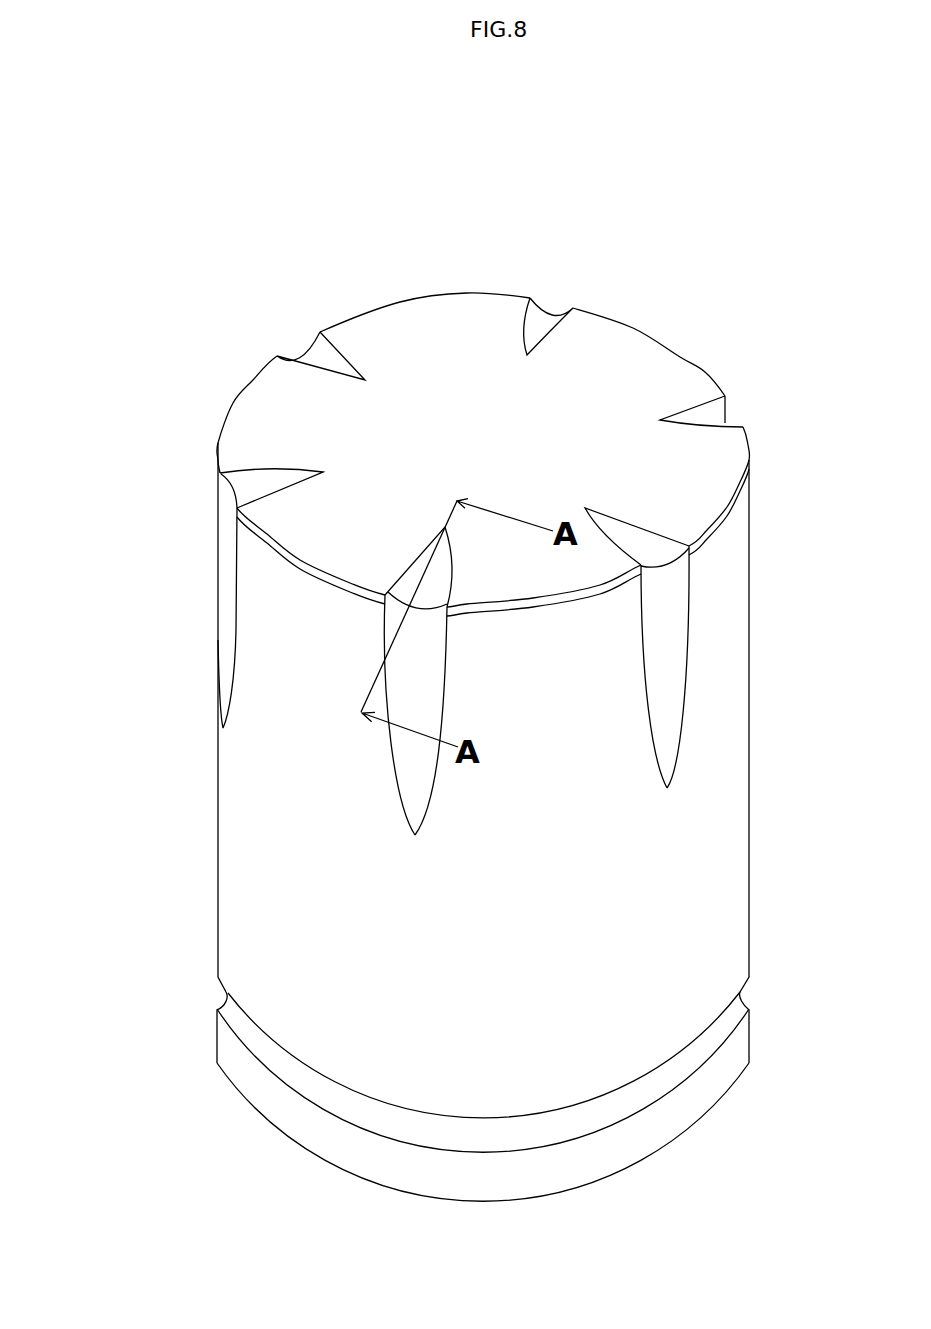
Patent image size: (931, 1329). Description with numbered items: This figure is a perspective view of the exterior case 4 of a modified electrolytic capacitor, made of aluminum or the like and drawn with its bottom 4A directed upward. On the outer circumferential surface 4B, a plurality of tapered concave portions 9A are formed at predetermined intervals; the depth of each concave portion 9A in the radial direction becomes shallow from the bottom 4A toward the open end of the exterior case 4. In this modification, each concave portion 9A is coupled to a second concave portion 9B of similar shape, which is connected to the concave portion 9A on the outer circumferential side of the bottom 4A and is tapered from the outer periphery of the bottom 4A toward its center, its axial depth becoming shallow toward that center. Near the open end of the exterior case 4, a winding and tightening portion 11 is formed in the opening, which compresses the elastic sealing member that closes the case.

The exterior case 4 is at (86, 549).
The bottom 4A is at (275, 597).
The outer circumferential surface 4B is at (226, 461).
The concave portion 9A is at (687, 657).
The concave portion 9B is at (652, 550).
The winding and tightening portion 11 is at (742, 1000).